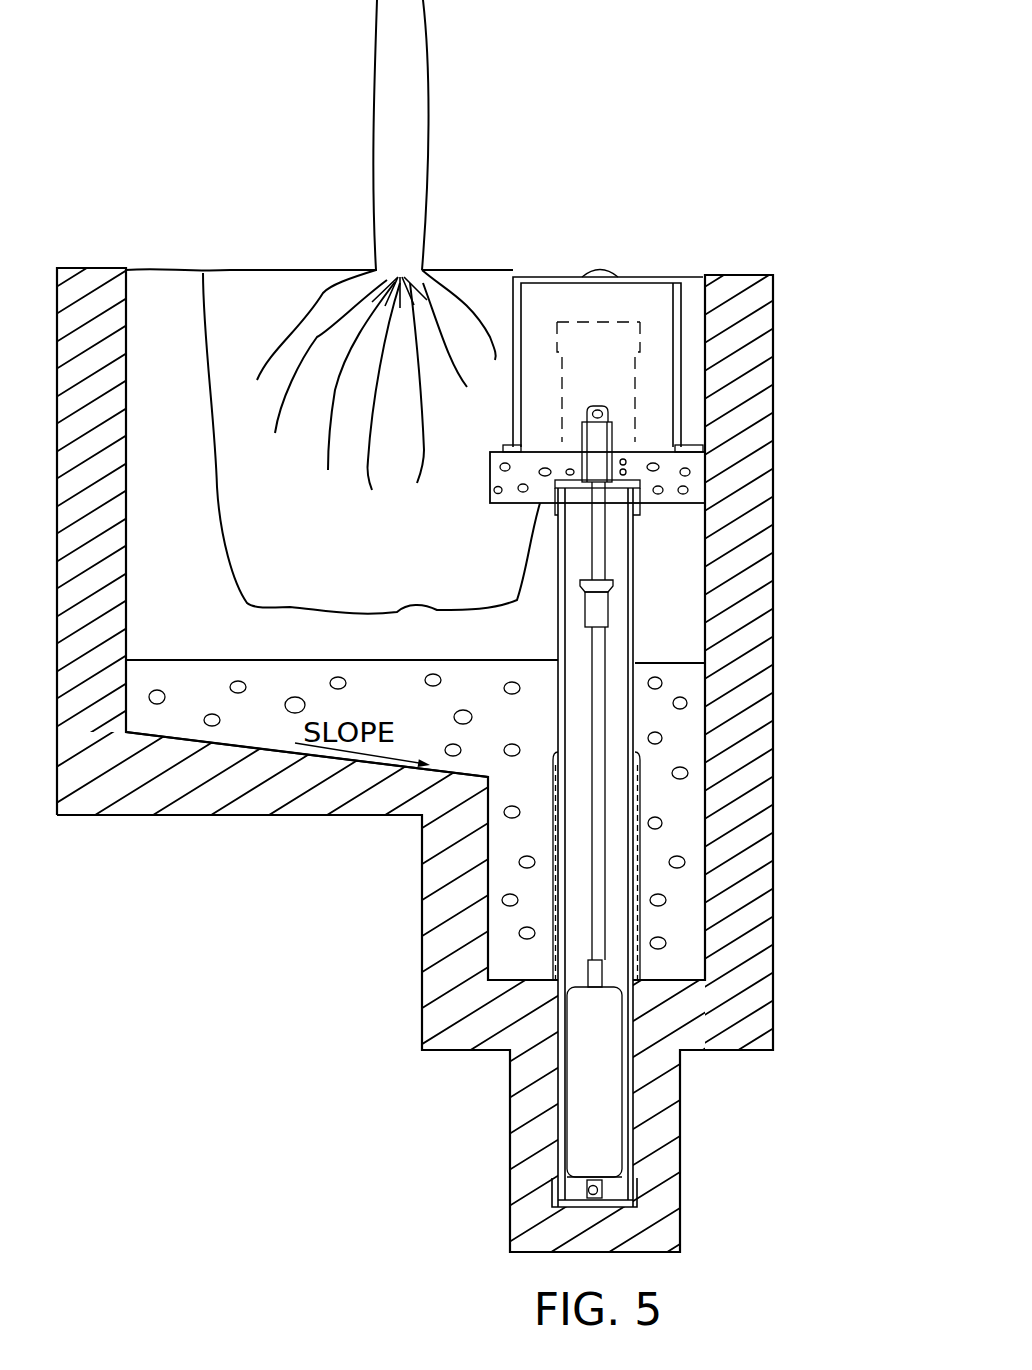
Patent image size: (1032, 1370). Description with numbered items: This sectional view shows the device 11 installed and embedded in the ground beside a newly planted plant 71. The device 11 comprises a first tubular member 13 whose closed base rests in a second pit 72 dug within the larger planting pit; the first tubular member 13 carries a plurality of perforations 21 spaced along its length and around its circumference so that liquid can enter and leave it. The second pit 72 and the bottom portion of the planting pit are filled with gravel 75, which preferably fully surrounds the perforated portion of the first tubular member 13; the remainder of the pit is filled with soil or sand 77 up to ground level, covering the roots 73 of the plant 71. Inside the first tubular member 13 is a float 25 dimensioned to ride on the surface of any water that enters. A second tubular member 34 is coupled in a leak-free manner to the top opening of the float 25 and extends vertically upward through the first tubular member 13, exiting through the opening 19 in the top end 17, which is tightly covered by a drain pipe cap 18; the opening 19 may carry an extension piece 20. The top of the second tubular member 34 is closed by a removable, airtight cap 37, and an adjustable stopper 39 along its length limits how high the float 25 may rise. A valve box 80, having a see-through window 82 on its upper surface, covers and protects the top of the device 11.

The plant 71 is at (408, 132).
The roots 73 is at (333, 437).
The soil or sand 77 is at (165, 370).
The valve box 80 is at (507, 270).
The see-through window 82 is at (598, 266).
The cap 37 is at (607, 412).
The opening 19 is at (585, 478).
The extension piece 20 is at (683, 447).
The top end 17 is at (545, 500).
The drain pipe cap 18 is at (640, 512).
The device 11 is at (680, 727).
The stopper 39 is at (597, 602).
The second tubular member 34 is at (597, 742).
The first tubular member 13 is at (633, 700).
The second pit 72 is at (490, 916).
The perforations 21 is at (638, 882).
The float 25 is at (593, 1085).
The gravel 75 is at (267, 733).